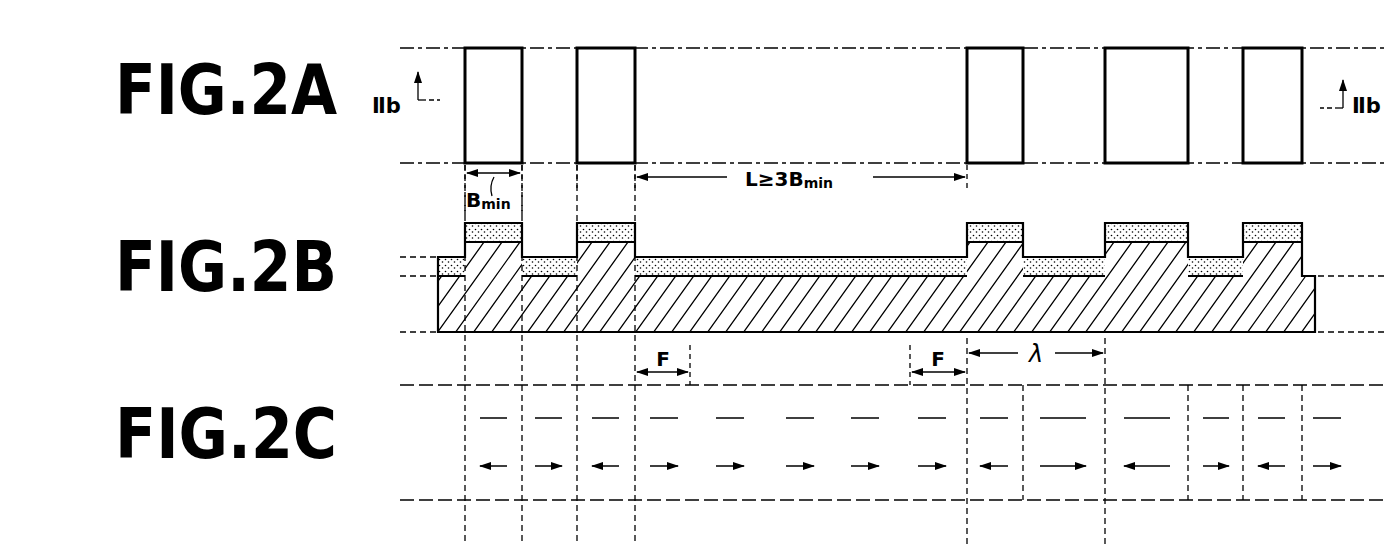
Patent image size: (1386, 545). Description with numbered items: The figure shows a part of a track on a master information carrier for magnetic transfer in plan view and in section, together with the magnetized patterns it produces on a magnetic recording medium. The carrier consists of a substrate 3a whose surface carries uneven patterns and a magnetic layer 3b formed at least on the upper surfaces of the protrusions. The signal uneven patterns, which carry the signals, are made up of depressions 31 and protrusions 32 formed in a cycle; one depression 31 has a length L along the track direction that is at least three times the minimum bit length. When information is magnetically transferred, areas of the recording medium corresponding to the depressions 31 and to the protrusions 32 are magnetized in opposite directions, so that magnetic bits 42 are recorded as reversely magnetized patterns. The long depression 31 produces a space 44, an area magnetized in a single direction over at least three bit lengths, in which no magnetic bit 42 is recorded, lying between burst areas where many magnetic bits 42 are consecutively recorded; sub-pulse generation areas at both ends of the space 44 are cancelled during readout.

In FIG. 2A, the depression 31 is at (953, 60).
In FIG. 2B, the depression 31 is at (944, 268).
In FIG. 2A, the protrusion 32 is at (603, 58).
In FIG. 2B, the protrusion 32 is at (1120, 233).
In FIG. 2B, the substrate 3a is at (1298, 270).
In FIG. 2B, the magnetic layer 3b is at (1287, 236).
In FIG. 2C, the magnetic bit 42 is at (608, 544).
In FIG. 2C, the space 44 is at (637, 503).